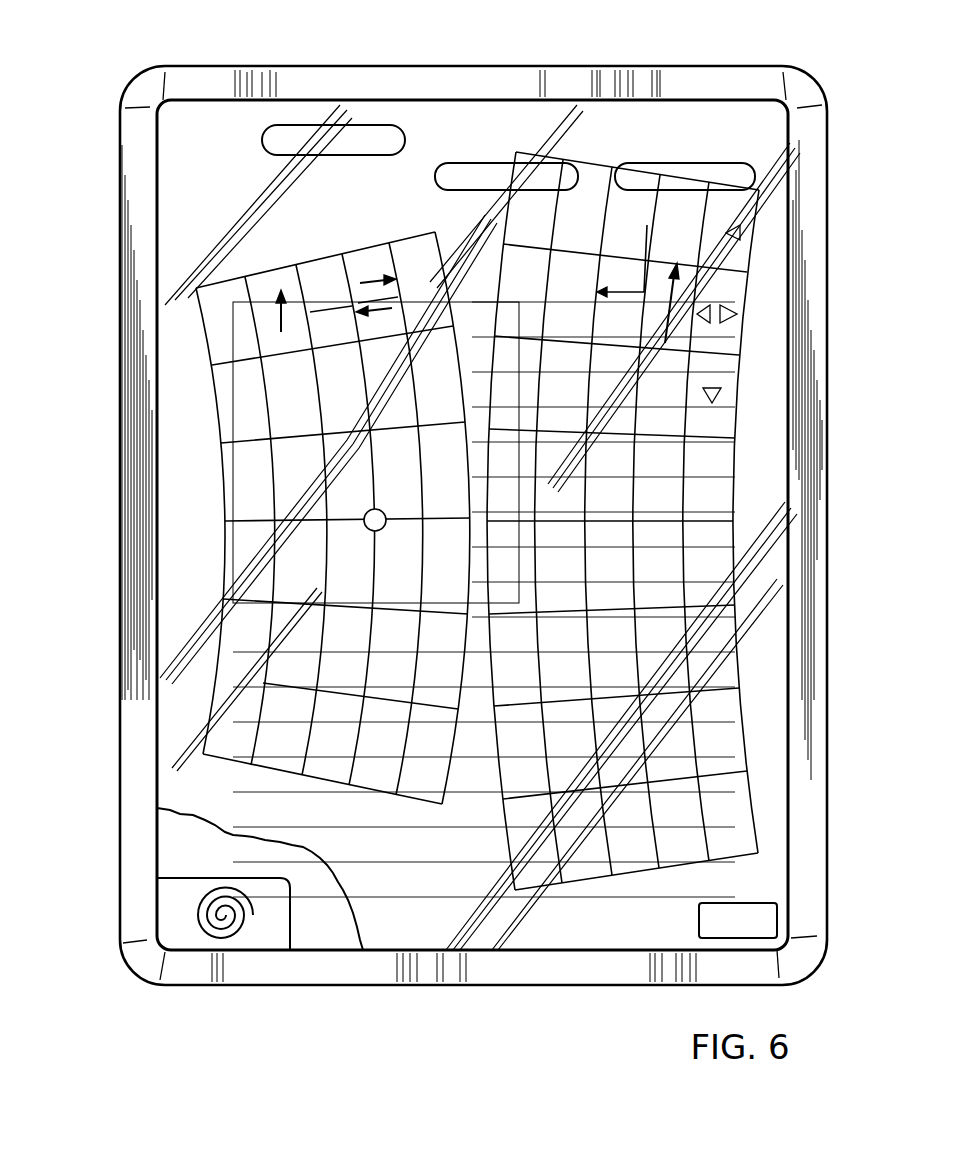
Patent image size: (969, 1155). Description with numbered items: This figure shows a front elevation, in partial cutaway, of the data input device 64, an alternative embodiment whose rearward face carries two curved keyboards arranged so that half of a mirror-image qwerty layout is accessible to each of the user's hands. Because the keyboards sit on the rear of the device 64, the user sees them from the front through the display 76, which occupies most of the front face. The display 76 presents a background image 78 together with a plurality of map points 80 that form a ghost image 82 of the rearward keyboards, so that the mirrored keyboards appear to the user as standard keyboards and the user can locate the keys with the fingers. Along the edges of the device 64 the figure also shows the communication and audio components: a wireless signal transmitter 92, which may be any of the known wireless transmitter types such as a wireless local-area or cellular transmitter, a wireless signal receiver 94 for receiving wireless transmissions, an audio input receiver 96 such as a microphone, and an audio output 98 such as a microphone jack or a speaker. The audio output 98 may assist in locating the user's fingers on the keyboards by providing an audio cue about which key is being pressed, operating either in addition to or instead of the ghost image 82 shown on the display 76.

The data input device 64 is at (315, 35).
The display 76 is at (468, 128).
The background image 78 is at (240, 300).
The map points 80 is at (437, 233).
The ghost image 82 is at (390, 858).
The wireless signal transmitter 92 is at (190, 903).
The wireless signal receiver 94 is at (165, 925).
The audio input receiver 96 is at (781, 913).
The audio output 98 is at (280, 132).